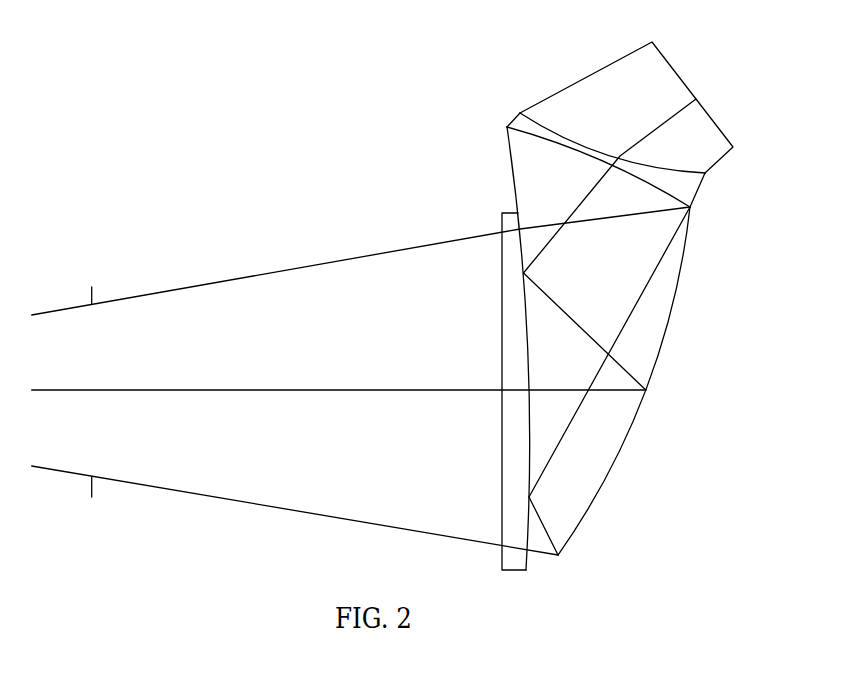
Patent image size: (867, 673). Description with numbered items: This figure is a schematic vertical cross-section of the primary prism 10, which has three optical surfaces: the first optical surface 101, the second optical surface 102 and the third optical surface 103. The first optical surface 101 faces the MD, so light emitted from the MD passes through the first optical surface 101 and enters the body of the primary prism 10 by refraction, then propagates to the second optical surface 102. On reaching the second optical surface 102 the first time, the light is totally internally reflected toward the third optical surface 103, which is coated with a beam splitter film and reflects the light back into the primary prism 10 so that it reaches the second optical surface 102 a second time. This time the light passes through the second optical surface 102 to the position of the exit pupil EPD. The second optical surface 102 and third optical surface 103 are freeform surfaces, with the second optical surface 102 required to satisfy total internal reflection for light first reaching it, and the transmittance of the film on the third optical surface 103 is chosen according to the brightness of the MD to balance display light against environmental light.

The primary prism 10 is at (509, 96).
The first optical surface 101 is at (581, 137).
The second optical surface 102 is at (504, 162).
The third optical surface 103 is at (664, 350).
The element MD is at (626, 92).
The exit pupil EPD is at (91, 375).